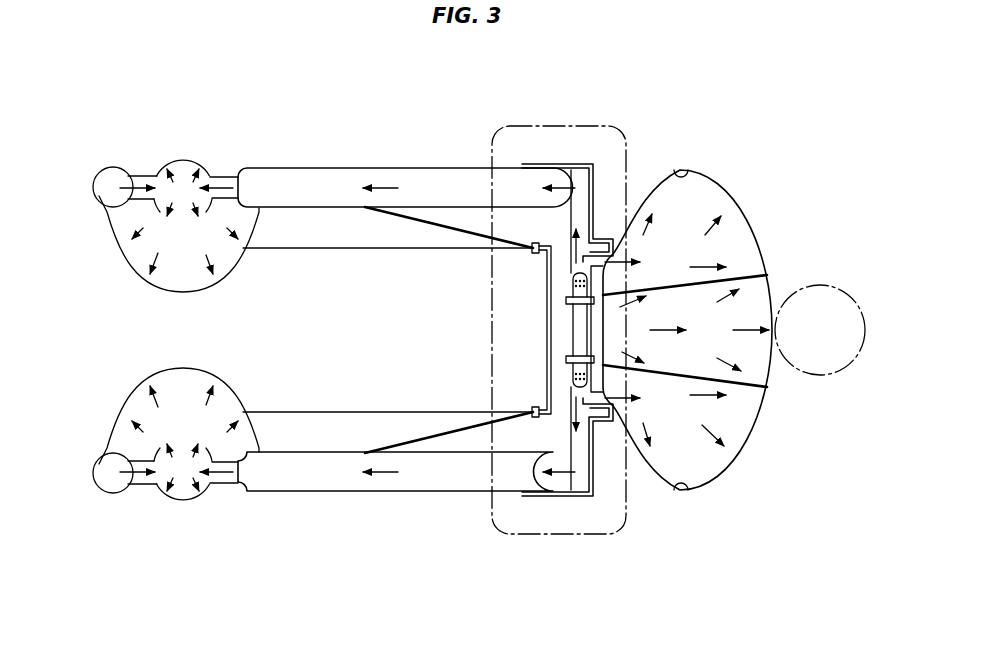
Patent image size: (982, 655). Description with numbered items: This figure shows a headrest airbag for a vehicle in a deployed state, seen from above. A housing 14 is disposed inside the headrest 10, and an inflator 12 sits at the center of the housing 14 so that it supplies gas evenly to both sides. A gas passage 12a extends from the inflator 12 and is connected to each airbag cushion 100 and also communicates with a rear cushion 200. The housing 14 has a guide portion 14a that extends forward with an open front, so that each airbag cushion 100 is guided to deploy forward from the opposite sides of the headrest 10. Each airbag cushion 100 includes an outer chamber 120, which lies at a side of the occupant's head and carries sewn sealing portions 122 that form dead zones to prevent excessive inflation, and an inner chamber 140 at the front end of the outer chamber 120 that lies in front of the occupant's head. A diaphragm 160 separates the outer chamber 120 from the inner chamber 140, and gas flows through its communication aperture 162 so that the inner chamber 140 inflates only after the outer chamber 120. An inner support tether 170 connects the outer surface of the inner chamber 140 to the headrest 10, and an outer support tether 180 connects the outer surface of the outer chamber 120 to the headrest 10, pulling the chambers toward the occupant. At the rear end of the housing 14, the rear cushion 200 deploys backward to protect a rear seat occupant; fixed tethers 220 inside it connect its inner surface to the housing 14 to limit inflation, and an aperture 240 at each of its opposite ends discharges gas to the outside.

The headrest 10 is at (619, 134).
The inflator 12 is at (578, 337).
The gas passage 12a is at (543, 200).
The housing 14 is at (550, 295).
The guide portion 14a is at (575, 496).
The airbag cushion 100 is at (366, 165).
The outer chamber 120 is at (333, 490).
The sealing portion 122 is at (228, 487).
The inner chamber 140 is at (140, 382).
The diaphragm 160 is at (140, 450).
The communication aperture 162 is at (183, 445).
The inner support tether 170 is at (308, 248).
The outer support tether 180 is at (447, 223).
The rear cushion 200 is at (757, 218).
The fixed tether 220 is at (742, 383).
The aperture 240 is at (682, 492).